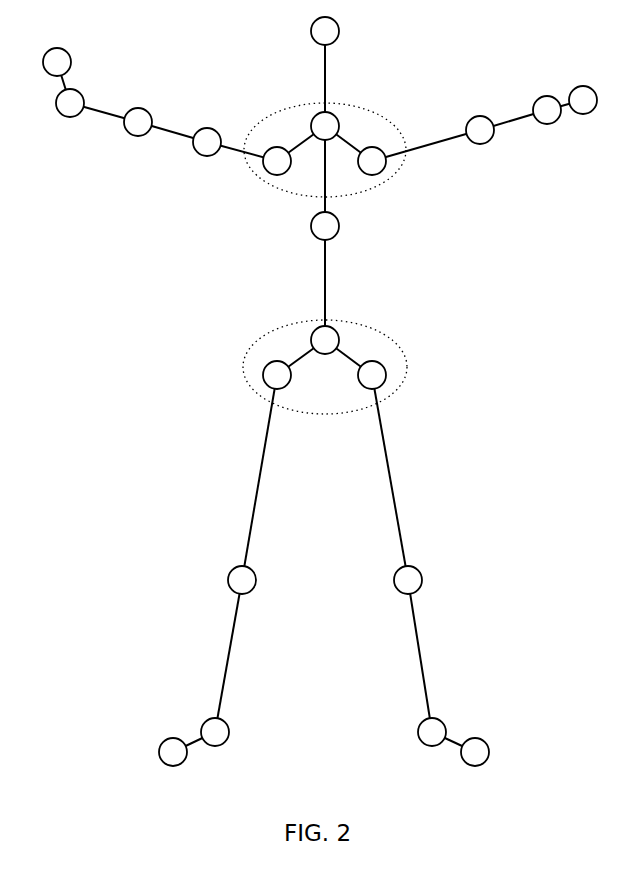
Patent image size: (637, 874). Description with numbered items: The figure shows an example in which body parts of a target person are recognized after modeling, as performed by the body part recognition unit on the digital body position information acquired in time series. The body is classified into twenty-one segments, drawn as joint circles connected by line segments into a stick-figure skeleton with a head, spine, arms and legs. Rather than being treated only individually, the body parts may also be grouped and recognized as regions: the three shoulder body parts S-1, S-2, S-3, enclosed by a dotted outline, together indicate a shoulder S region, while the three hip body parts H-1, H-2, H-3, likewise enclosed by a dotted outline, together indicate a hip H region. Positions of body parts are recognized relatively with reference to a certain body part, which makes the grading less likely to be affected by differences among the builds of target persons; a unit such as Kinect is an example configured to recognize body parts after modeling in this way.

The shoulder region S is at (378, 110).
The shoulder body part S-1 is at (317, 111).
The shoulder body part S-2 is at (274, 176).
The shoulder body part S-3 is at (374, 176).
The hip region H is at (378, 327).
The hip body part H-1 is at (316, 327).
The hip body part H-2 is at (266, 384).
The hip body part H-3 is at (383, 384).